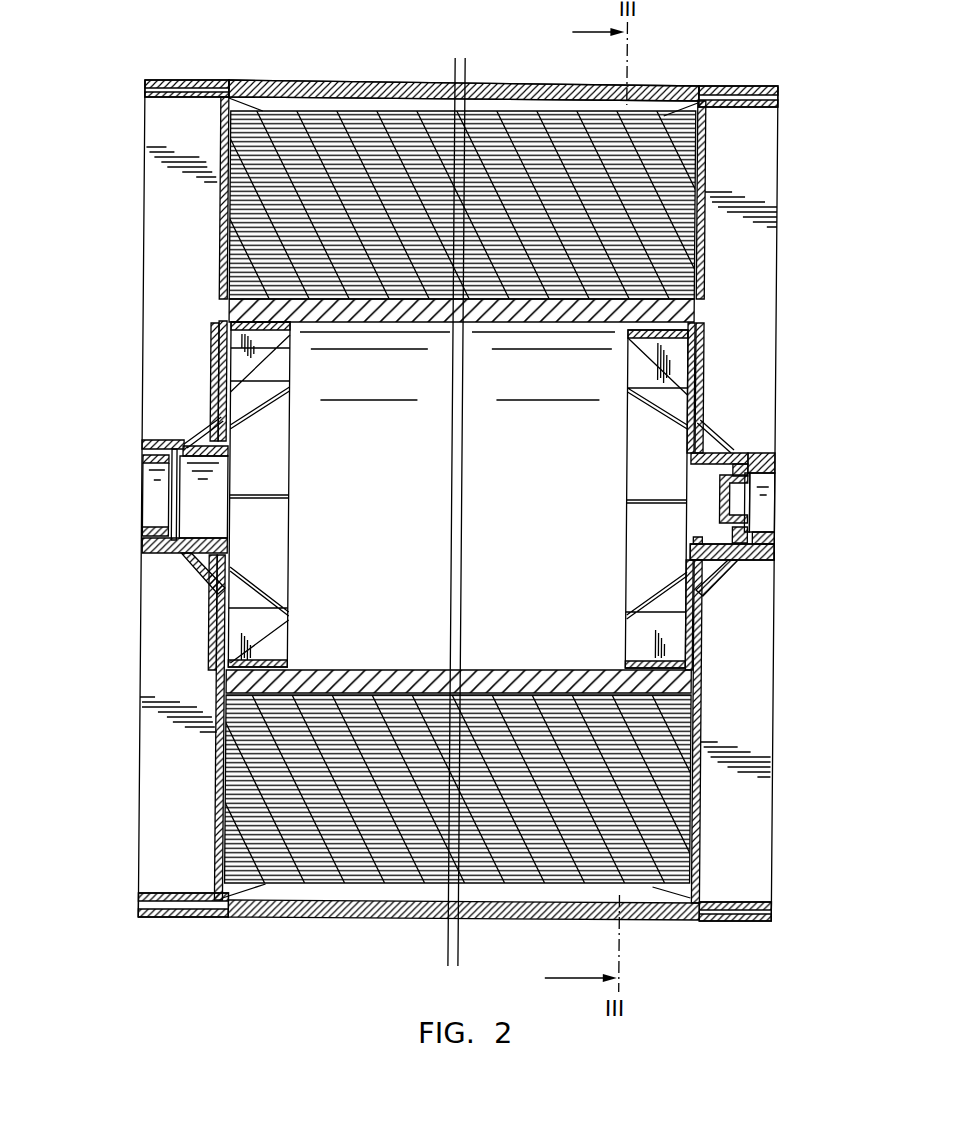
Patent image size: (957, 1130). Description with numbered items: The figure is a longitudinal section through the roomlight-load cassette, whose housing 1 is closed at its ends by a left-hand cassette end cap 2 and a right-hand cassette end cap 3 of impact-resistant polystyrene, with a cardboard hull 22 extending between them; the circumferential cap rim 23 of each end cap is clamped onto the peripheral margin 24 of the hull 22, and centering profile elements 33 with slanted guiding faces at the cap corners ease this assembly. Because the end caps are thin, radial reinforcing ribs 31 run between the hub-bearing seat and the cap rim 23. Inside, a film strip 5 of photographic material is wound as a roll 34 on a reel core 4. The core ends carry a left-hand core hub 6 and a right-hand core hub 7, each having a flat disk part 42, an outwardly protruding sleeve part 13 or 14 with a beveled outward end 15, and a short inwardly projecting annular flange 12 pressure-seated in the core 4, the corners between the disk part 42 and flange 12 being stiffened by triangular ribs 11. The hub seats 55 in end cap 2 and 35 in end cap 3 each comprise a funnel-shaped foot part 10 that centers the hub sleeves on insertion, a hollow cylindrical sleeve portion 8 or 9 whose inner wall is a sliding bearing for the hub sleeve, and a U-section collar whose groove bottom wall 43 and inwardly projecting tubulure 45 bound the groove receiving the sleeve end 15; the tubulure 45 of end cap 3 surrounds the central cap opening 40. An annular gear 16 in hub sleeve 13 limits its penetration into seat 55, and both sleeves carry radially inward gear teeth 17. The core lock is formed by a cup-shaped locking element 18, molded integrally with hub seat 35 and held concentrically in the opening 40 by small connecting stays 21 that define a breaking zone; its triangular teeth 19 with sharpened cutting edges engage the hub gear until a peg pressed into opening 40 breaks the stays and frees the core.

The housing 1 is at (298, 68).
The left-hand cassette end cap 2 is at (168, 209).
The right-hand cassette end cap 3 is at (762, 175).
The reel core 4 is at (512, 680).
The film strip 5 is at (508, 112).
The left-hand core hub 6 is at (208, 430).
The right-hand core hub 7 is at (713, 435).
The hollow cylindrical sleeve portion 8 is at (156, 556).
The hollow cylindrical sleeve portion 9 is at (757, 561).
The funnel-shaped foot part 10 is at (201, 572).
The triangular ribs 11 is at (265, 393).
The annular flange 12 is at (658, 338).
The sleeve part 13 is at (202, 539).
The sleeve part 14 is at (704, 540).
The outward ends 15 is at (170, 440).
The annular gear 16 is at (186, 533).
The gear teeth 17 is at (738, 535).
The locking cup 18 is at (724, 497).
The teeth 19 is at (735, 478).
The connecting stays 21 is at (756, 483).
The hull 22 is at (392, 81).
The cap rim 23 is at (178, 81).
The peripheral margin 24 is at (160, 81).
The reinforcing ribs 31 is at (760, 300).
The centering profile elements 33 is at (292, 128).
The roll 34 is at (471, 102).
The hub seat 35 is at (772, 575).
The central cap opening 40 is at (765, 506).
The flat disk part 42 is at (222, 348).
The groove bottom wall 43 is at (156, 455).
The tubulure 45 is at (152, 530).
The hub seat 55 is at (176, 570).